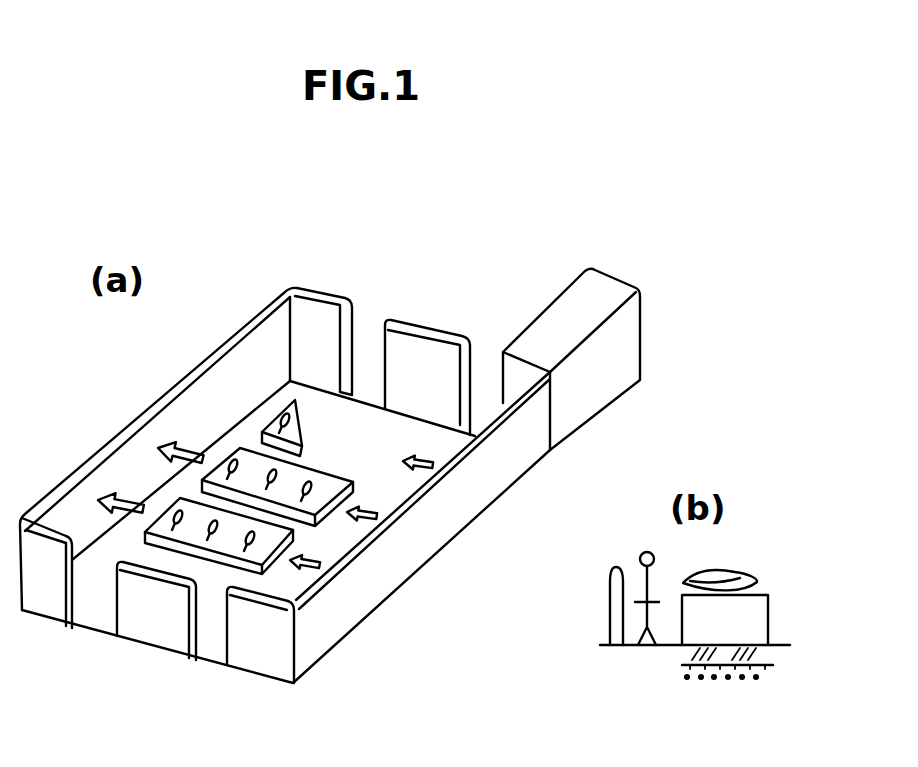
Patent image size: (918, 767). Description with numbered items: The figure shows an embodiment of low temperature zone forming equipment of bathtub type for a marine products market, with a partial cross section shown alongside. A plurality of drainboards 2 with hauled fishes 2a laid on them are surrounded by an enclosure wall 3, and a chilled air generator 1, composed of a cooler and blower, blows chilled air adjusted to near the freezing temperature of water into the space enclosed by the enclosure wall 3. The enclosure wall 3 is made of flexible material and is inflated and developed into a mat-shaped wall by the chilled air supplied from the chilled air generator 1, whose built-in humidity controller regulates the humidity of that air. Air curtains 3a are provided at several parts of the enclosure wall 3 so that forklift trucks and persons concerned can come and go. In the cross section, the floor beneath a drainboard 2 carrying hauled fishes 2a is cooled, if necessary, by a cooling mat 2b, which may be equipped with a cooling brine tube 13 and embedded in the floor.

The chilled air generator 1 is at (575, 297).
The drainboard 2 is at (335, 482).
The hauled fishes 2a is at (301, 396).
The cooling mat 2b is at (801, 641).
The enclosure wall 3 is at (485, 497).
The air curtain 3a is at (93, 612).
The cooling brine tube 13 is at (729, 679).